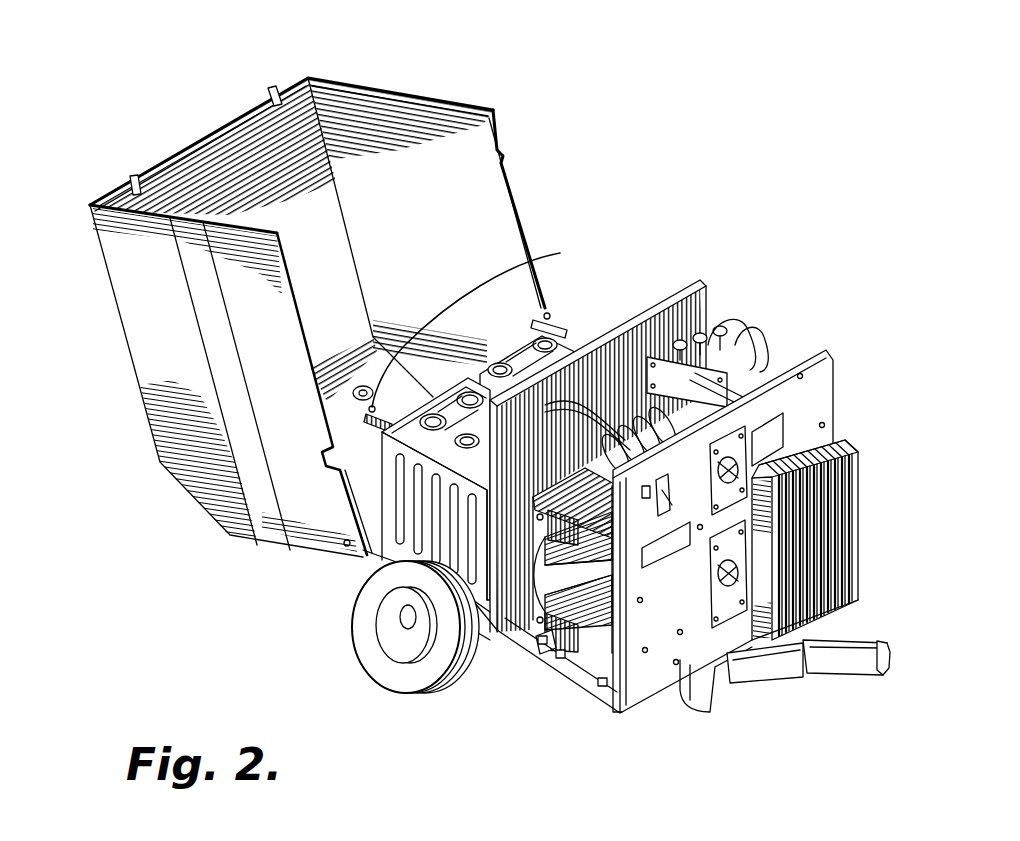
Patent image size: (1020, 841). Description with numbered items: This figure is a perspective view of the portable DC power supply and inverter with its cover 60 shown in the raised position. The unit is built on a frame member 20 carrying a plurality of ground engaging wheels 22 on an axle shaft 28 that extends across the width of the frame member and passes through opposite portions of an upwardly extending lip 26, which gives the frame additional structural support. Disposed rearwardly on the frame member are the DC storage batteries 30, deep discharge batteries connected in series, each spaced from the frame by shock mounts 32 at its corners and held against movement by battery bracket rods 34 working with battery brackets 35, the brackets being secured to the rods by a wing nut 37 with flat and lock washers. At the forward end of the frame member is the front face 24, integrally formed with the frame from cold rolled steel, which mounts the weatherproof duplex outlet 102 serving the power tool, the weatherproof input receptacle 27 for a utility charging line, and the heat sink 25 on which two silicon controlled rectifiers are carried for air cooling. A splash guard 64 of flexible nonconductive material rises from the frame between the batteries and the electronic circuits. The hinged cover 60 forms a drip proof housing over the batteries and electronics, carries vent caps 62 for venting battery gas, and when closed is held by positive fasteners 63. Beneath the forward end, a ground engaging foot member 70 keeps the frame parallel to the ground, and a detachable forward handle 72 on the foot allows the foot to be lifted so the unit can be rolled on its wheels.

The frame member 20 is at (572, 660).
The ground engaging wheels 22 is at (370, 630).
The front face 24 is at (759, 553).
The heat sink 25 is at (860, 565).
The lip 26 is at (530, 660).
The input receptacle 27 is at (718, 605).
The axle shaft 28 is at (404, 620).
The DC storage batteries 30 is at (544, 348).
The shock mounts 32 is at (478, 642).
The battery bracket rods 34 is at (366, 416).
The battery brackets 35 is at (352, 520).
The wing nut 37 is at (333, 452).
The cover 60 is at (167, 313).
The vent caps 62 is at (564, 250).
The positive fasteners 63 is at (273, 93).
The splash guard 64 is at (690, 316).
The ground engaging foot member 70 is at (722, 705).
The forward handle 72 is at (832, 668).
The duplex outlet 102 is at (828, 440).